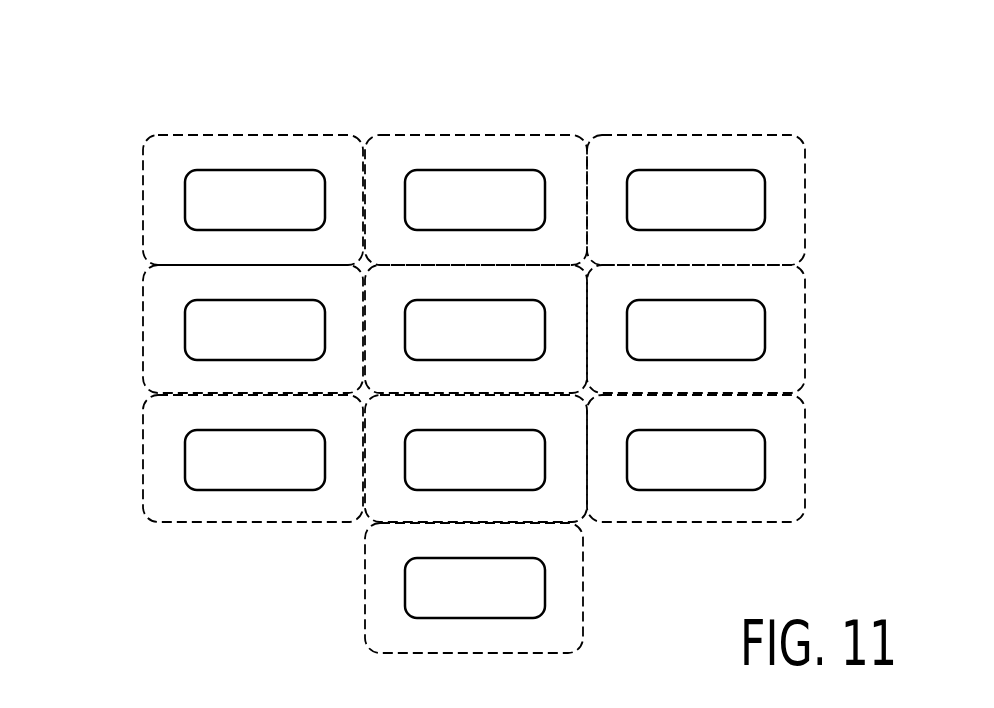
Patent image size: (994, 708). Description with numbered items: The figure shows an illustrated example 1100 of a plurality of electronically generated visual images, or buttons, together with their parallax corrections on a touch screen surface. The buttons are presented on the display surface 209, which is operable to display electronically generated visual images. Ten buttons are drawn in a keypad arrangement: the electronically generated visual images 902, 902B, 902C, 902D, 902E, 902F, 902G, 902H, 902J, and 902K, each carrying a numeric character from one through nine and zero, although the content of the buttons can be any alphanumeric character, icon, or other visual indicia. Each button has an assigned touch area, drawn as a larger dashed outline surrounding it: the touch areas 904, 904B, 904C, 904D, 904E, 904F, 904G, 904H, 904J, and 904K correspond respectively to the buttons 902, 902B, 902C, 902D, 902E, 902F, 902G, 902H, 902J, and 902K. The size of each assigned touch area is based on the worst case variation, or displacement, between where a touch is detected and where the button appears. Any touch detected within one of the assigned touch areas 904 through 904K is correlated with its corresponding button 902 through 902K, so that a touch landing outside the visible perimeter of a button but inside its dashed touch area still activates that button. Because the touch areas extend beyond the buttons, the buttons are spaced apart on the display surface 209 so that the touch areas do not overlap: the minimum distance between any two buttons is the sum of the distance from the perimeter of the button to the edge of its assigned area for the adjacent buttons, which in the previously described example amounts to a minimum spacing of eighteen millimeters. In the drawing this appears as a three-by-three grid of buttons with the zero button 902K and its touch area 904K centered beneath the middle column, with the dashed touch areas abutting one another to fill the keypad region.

The display surface 209 is at (185, 72).
The keypad layout 1100 is at (745, 108).
The assigned touch area 904 is at (141, 174).
The assigned touch area 904B is at (447, 128).
The assigned touch area 904C is at (668, 128).
The assigned touch area 904D is at (138, 314).
The assigned touch area 904E is at (369, 382).
The assigned touch area 904F is at (814, 299).
The assigned touch area 904G is at (136, 473).
The assigned touch area 904H is at (590, 523).
The assigned touch area 904J is at (813, 485).
The assigned touch area 904K is at (592, 615).
The electronically generated visual image 902 is at (278, 170).
The electronically generated visual image 902B is at (500, 170).
The electronically generated visual image 902C is at (765, 198).
The electronically generated visual image 902D is at (185, 330).
The electronically generated visual image 902E is at (480, 300).
The electronically generated visual image 902F is at (765, 330).
The electronically generated visual image 902G is at (185, 450).
The electronically generated visual image 902H is at (405, 470).
The electronically generated visual image 902J is at (765, 458).
The electronically generated visual image 902K is at (405, 580).